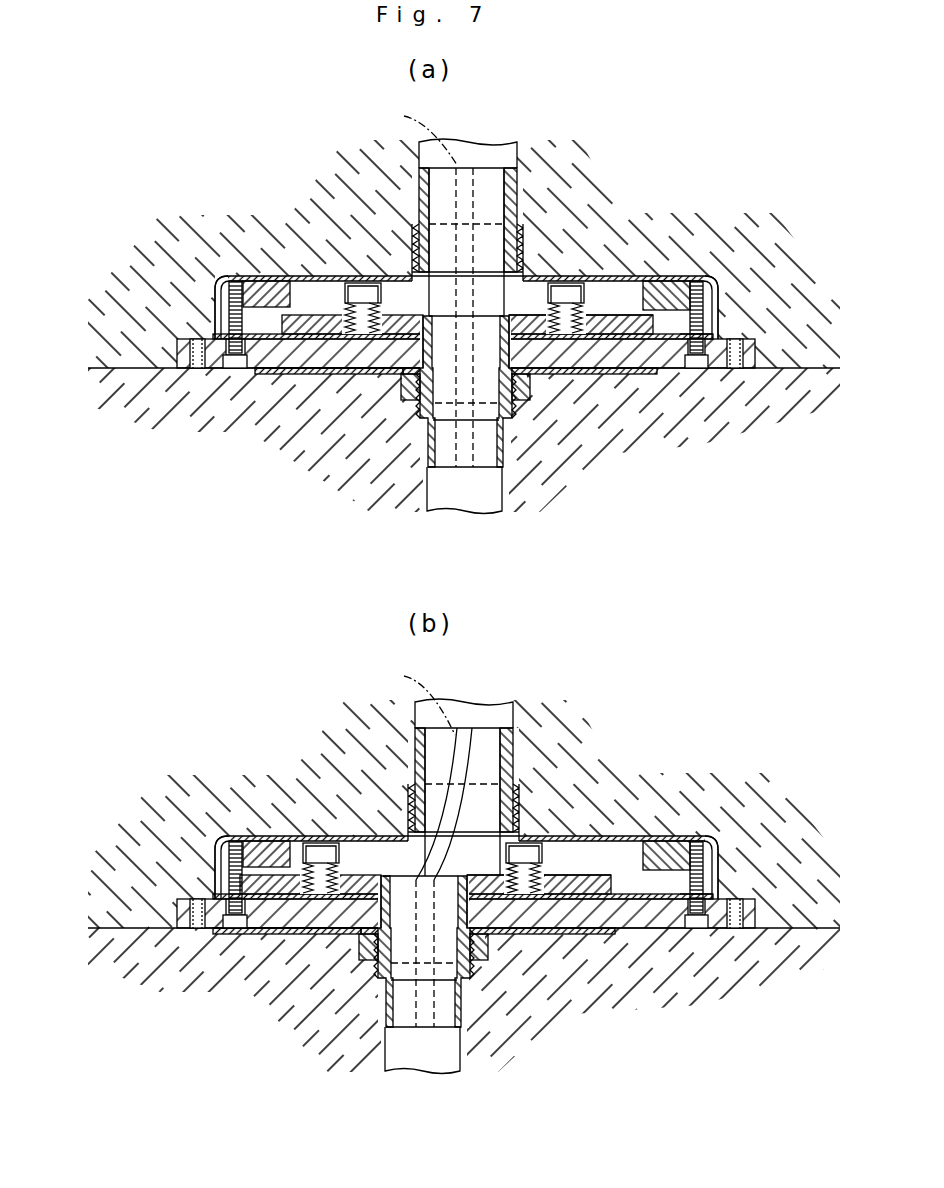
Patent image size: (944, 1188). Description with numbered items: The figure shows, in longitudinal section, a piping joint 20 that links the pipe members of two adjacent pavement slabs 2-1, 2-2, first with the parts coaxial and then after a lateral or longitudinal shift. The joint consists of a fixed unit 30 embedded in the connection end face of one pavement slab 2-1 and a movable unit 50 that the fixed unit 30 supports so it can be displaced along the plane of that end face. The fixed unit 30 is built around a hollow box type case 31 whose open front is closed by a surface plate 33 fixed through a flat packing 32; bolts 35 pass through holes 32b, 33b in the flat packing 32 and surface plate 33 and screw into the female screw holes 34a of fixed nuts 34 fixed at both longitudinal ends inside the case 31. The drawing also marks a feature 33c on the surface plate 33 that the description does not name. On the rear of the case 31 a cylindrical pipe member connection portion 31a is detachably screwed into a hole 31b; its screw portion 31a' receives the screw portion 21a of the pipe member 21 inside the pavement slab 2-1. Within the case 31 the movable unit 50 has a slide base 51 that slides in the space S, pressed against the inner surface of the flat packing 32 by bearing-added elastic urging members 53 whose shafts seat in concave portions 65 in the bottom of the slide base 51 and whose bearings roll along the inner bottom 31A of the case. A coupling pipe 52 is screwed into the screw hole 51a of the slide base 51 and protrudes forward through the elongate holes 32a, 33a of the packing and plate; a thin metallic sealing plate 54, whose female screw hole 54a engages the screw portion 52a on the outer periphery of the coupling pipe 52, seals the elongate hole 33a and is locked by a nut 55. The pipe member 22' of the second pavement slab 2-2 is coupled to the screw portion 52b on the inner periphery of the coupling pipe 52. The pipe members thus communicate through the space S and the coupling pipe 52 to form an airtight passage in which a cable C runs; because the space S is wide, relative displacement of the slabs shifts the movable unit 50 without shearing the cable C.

The piping joint 20 is at (178, 222).
The fixed unit 30 is at (232, 262).
The movable unit 50 is at (538, 418).
The pavement slab 2-1 is at (127, 300).
The pavement slab 2-2 is at (125, 380).
The pipe member 21 is at (520, 172).
The screw portion 21a is at (522, 245).
The pipe member 22' is at (472, 770).
The case 31 is at (599, 278).
The pipe member connection portion 31a is at (544, 500).
The screw portion 31a' is at (391, 500).
The inner bottom 31A is at (289, 277).
The hole 31b is at (416, 270).
The flat packing 32 is at (723, 336).
The elongate hole 32a is at (540, 343).
The hole 32b is at (690, 370).
The surface plate 33 is at (757, 352).
The elongate hole 33a is at (353, 364).
The hole 33b is at (708, 378).
The threaded hole 33c is at (196, 369).
The fixed nut 34 is at (680, 288).
The female screw hole 34a is at (710, 280).
The bolt 35 is at (213, 318).
The slide base 51 is at (614, 318).
The screw hole 51a is at (524, 305).
The coupling pipe 52 is at (514, 423).
The screw portion 52a is at (421, 388).
The screw portion 52b is at (521, 498).
The bearing-added elastic urging member 53 is at (337, 293).
The sealing plate 54 is at (287, 374).
The female screw hole 54a is at (405, 372).
The nut 55 is at (530, 393).
The concave portion 65 is at (597, 318).
The cable C is at (423, 419).
The space S is at (427, 300).